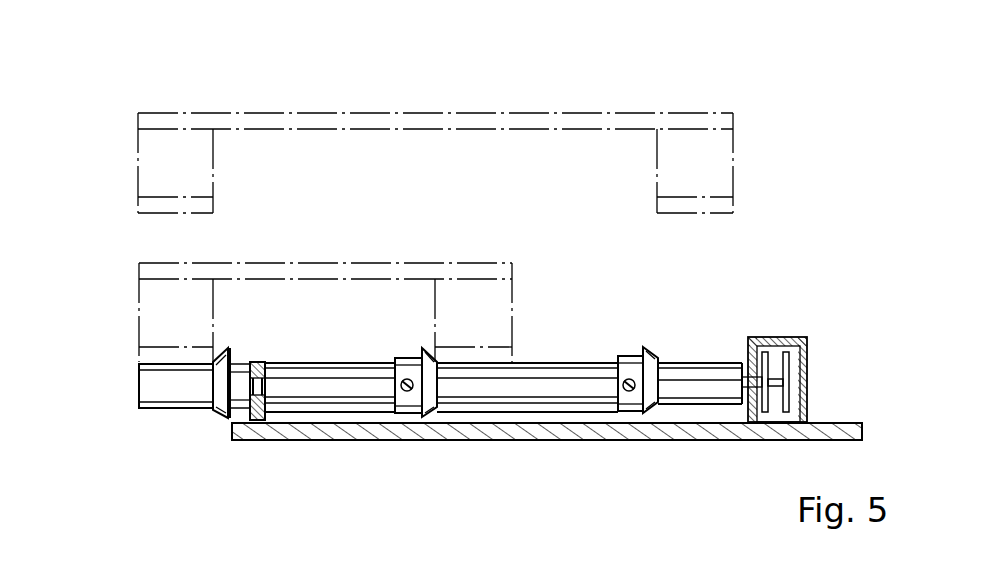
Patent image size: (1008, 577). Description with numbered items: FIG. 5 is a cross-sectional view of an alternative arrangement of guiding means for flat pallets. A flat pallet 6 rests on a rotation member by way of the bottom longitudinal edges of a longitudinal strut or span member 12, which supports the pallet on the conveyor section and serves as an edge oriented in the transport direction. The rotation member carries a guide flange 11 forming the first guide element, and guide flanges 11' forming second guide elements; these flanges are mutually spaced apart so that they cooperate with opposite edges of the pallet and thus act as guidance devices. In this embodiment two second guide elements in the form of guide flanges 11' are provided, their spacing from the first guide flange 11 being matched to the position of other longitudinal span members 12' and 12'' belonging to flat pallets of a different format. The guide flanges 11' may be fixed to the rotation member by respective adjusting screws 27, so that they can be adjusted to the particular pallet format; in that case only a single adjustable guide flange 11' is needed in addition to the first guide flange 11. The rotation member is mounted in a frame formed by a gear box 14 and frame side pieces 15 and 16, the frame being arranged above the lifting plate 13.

The flat pallet 6 is at (752, 164).
The longitudinal strut or span member 12 is at (145, 245).
The longitudinal span member or strut 12' is at (354, 301).
The longitudinal span member or strut 12'' is at (695, 213).
The guide flange 11 is at (194, 420).
The guide flange 11' is at (558, 420).
The frame side piece 16 is at (255, 360).
The adjusting screw 27 is at (395, 388).
The frame side piece 15 is at (543, 413).
The gear box 14 is at (778, 338).
The lifting plate 13 is at (838, 432).